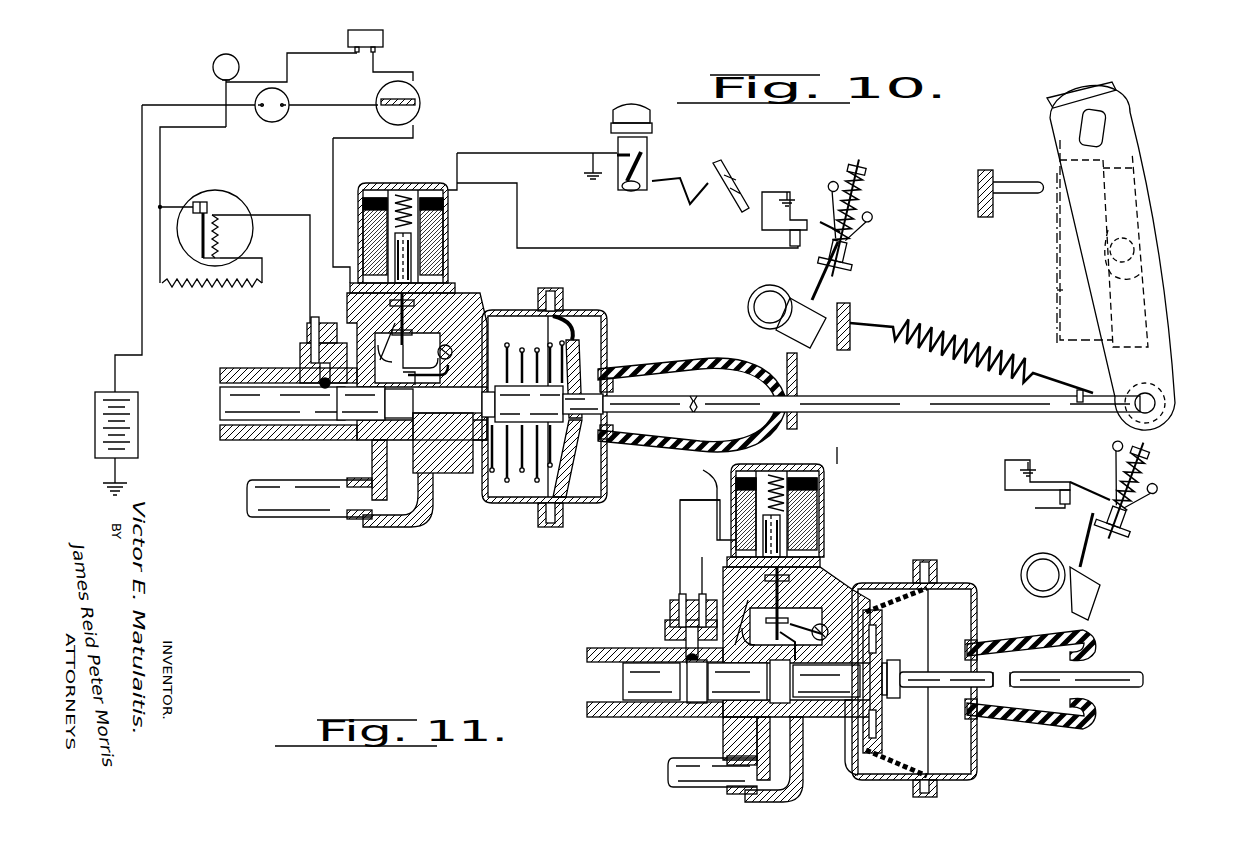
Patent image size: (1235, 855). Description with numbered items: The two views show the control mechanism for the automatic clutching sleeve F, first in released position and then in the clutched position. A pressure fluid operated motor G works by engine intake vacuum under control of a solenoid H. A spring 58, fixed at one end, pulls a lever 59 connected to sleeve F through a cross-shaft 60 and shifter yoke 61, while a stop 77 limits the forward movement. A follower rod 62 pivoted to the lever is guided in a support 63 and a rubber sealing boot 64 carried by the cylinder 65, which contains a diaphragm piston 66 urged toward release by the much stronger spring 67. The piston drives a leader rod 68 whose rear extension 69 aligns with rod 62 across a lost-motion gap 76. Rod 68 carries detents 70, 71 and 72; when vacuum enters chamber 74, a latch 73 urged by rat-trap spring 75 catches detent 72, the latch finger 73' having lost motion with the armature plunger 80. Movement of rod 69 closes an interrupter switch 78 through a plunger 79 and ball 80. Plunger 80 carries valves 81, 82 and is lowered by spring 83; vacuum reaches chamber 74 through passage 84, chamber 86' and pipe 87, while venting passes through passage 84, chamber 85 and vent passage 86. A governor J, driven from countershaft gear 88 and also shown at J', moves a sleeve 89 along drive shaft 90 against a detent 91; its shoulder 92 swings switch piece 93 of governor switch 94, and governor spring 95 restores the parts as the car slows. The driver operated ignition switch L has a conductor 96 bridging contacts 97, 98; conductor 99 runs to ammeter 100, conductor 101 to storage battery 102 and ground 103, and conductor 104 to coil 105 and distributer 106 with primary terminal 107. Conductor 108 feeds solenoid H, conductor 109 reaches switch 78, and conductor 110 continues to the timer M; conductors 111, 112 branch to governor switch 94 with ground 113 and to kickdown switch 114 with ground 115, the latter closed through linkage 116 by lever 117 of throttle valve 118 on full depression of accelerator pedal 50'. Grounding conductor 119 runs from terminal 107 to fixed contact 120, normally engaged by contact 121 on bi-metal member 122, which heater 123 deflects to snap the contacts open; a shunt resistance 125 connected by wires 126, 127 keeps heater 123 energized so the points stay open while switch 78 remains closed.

In FIG. 10, the accelerator pedal 50' is at (736, 182).
In FIG. 10, the spring 58 is at (940, 333).
In FIG. 10, the lever 59 is at (1117, 363).
In FIG. 10, the cross-shaft 60 is at (1082, 125).
In FIG. 10, the shifter yoke 61 is at (1057, 245).
In FIG. 10, the follower rod 62 is at (932, 414).
In FIG. 11, the follower rod 62 is at (1115, 672).
In FIG. 10, the support 63 is at (798, 370).
In FIG. 10, the rubber sealing boot 64 is at (745, 360).
In FIG. 11, the rubber sealing boot 64 is at (1058, 638).
In FIG. 10, the cylinder 65 is at (520, 504).
In FIG. 11, the cylinder 65 is at (950, 588).
In FIG. 10, the diaphragm piston 66 is at (565, 516).
In FIG. 11, the diaphragm piston 66 is at (912, 782).
In FIG. 10, the spring 67 is at (502, 472).
In FIG. 11, the spring 67 is at (862, 740).
In FIG. 10, the leader rod 68 is at (470, 445).
In FIG. 11, the leader rod 68 is at (738, 717).
In FIG. 10, the rear extension 69 is at (640, 396).
In FIG. 11, the rear extension 69 is at (946, 688).
In FIG. 10, the detent 70 is at (330, 441).
In FIG. 11, the detent 70 is at (628, 716).
In FIG. 10, the detent 71 is at (410, 442).
In FIG. 11, the detent 71 is at (700, 717).
In FIG. 10, the detent 72 is at (440, 441).
In FIG. 11, the detent 72 is at (780, 718).
In FIG. 10, the latch 73 is at (420, 377).
In FIG. 11, the latch 73 is at (815, 681).
In FIG. 10, the inwardly bent finger 73' is at (434, 354).
In FIG. 11, the inwardly bent finger 73' is at (784, 641).
In FIG. 10, the chamber 74 is at (548, 294).
In FIG. 11, the chamber 74 is at (858, 770).
In FIG. 10, the rat-trap spring 75 is at (448, 380).
In FIG. 11, the rat-trap spring 75 is at (811, 629).
In FIG. 11, the gap 76 is at (1005, 700).
In FIG. 10, the stop 77 is at (1004, 192).
In FIG. 10, the interrupter switch 78 is at (307, 335).
In FIG. 11, the interrupter switch 78 is at (670, 610).
In FIG. 10, the plunger 79 is at (300, 361).
In FIG. 11, the plunger 79 is at (668, 640).
In FIG. 10, the armature plunger 80 is at (440, 256).
In FIG. 11, the armature plunger 80 is at (826, 524).
In FIG. 10, the valve 81 is at (440, 277).
In FIG. 11, the valve 81 is at (826, 548).
In FIG. 10, the valve 82 is at (455, 327).
In FIG. 11, the valve 82 is at (835, 590).
In FIG. 10, the spring 83 is at (402, 193).
In FIG. 11, the spring 83 is at (780, 476).
In FIG. 10, the passage 84 is at (460, 300).
In FIG. 11, the passage 84 is at (840, 578).
In FIG. 10, the chamber 85 is at (375, 310).
In FIG. 11, the chamber 85 is at (748, 590).
In FIG. 10, the vent passage 86 is at (358, 334).
In FIG. 11, the vent passage 86 is at (698, 609).
In FIG. 10, the chamber 86' is at (375, 399).
In FIG. 11, the chamber 86' is at (727, 677).
In FIG. 10, the pipe 87 is at (295, 515).
In FIG. 11, the pipe 87 is at (670, 783).
In FIG. 10, the countershaft gear 88 is at (748, 308).
In FIG. 11, the countershaft gear 88 is at (1040, 555).
In FIG. 10, the sleeve 89 is at (852, 258).
In FIG. 11, the sleeve 89 is at (1135, 520).
In FIG. 10, the drive shaft 90 is at (826, 312).
In FIG. 11, the drive shaft 90 is at (1102, 575).
In FIG. 10, the detent 91 is at (838, 271).
In FIG. 11, the detent 91 is at (1103, 525).
In FIG. 10, the shoulder 92 is at (860, 262).
In FIG. 11, the shoulder 92 is at (1144, 528).
In FIG. 10, the swinging switch piece 93 is at (797, 224).
In FIG. 11, the swinging switch piece 93 is at (1068, 484).
In FIG. 10, the governor switch 94 is at (790, 238).
In FIG. 11, the governor switch 94 is at (1058, 494).
In FIG. 10, the governor spring 95 is at (870, 208).
In FIG. 11, the governor spring 95 is at (1142, 470).
In FIG. 10, the conductor 96 is at (417, 93).
In FIG. 10, the contact 97 is at (392, 121).
In FIG. 10, the contact 98 is at (416, 103).
In FIG. 10, the conductor 99 is at (323, 105).
In FIG. 10, the ammeter 100 is at (267, 121).
In FIG. 10, the conductor 101 is at (160, 207).
In FIG. 10, the storage battery 102 is at (96, 431).
In FIG. 10, the ground 103 is at (115, 484).
In FIG. 10, the conductor 104 is at (413, 72).
In FIG. 10, the coil 105 is at (385, 37).
In FIG. 10, the distributer 106 is at (214, 60).
In FIG. 10, the primary terminal 107 is at (224, 82).
In FIG. 10, the second conductor 108 is at (333, 192).
In FIG. 11, the second conductor 108 is at (690, 500).
In FIG. 10, the conductor 109 is at (457, 186).
In FIG. 11, the conductor 109 is at (846, 460).
In FIG. 10, the conductor 110 is at (310, 232).
In FIG. 11, the conductor 110 is at (680, 552).
In FIG. 10, the conductor 111 is at (660, 249).
In FIG. 10, the conductor 112 is at (531, 154).
In FIG. 10, the ground 113 is at (787, 199).
In FIG. 11, the ground 113 is at (1028, 468).
In FIG. 10, the kickdown switch 114 is at (618, 152).
In FIG. 10, the ground 115 is at (591, 179).
In FIG. 10, the linkage 116 is at (676, 192).
In FIG. 10, the lever 117 is at (624, 191).
In FIG. 10, the engine throttle valve 118 is at (648, 167).
In FIG. 10, the grounding conductor 119 is at (160, 174).
In FIG. 10, the fixed contact 120 is at (194, 204).
In FIG. 10, the contact 121 is at (203, 212).
In FIG. 10, the bi-metal conductor member 122 is at (204, 258).
In FIG. 10, the resistance heating element 123 is at (216, 224).
In FIG. 10, the resistance 125 is at (192, 285).
In FIG. 10, the wire 126 is at (262, 284).
In FIG. 10, the wire 127 is at (142, 250).
In FIG. 10, the solenoid H is at (449, 231).
In FIG. 11, the solenoid H is at (826, 503).
In FIG. 10, the pressure fluid operated motor G is at (506, 318).
In FIG. 11, the pressure fluid operated motor G is at (914, 583).
In FIG. 10, the timer control device M is at (219, 192).
In FIG. 10, the shift sleeve F is at (1060, 289).
In FIG. 10, the governor J is at (876, 214).
In FIG. 11, the governor J' is at (1149, 477).
In FIG. 10, the driver operated ignition switch L is at (378, 97).